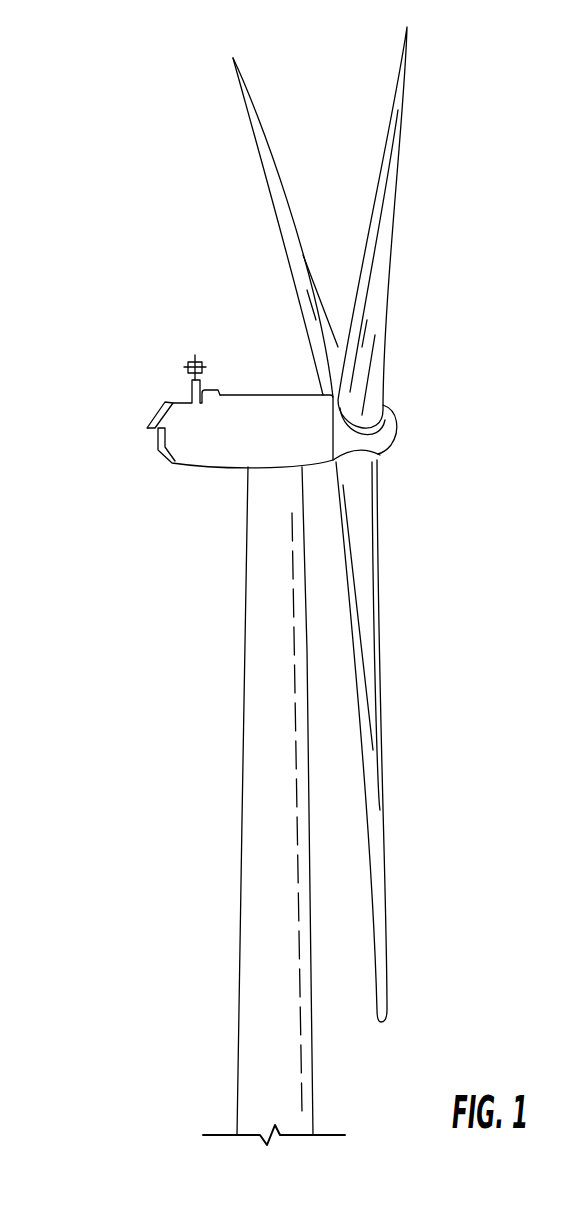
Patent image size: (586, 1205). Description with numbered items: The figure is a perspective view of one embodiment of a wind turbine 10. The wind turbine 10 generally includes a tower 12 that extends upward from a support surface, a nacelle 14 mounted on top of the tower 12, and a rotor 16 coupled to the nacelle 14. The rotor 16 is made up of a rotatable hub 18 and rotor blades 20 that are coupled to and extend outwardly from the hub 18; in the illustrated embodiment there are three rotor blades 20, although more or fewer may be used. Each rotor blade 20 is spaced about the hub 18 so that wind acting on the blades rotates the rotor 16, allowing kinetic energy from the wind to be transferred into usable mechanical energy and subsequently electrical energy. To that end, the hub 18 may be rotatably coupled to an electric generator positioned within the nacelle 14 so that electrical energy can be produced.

The wind turbine 10 is at (112, 160).
The tower 12 is at (242, 820).
The nacelle 14 is at (205, 478).
The rotor 16 is at (434, 411).
The rotatable hub 18 is at (397, 437).
The rotor blade 20 is at (378, 213).